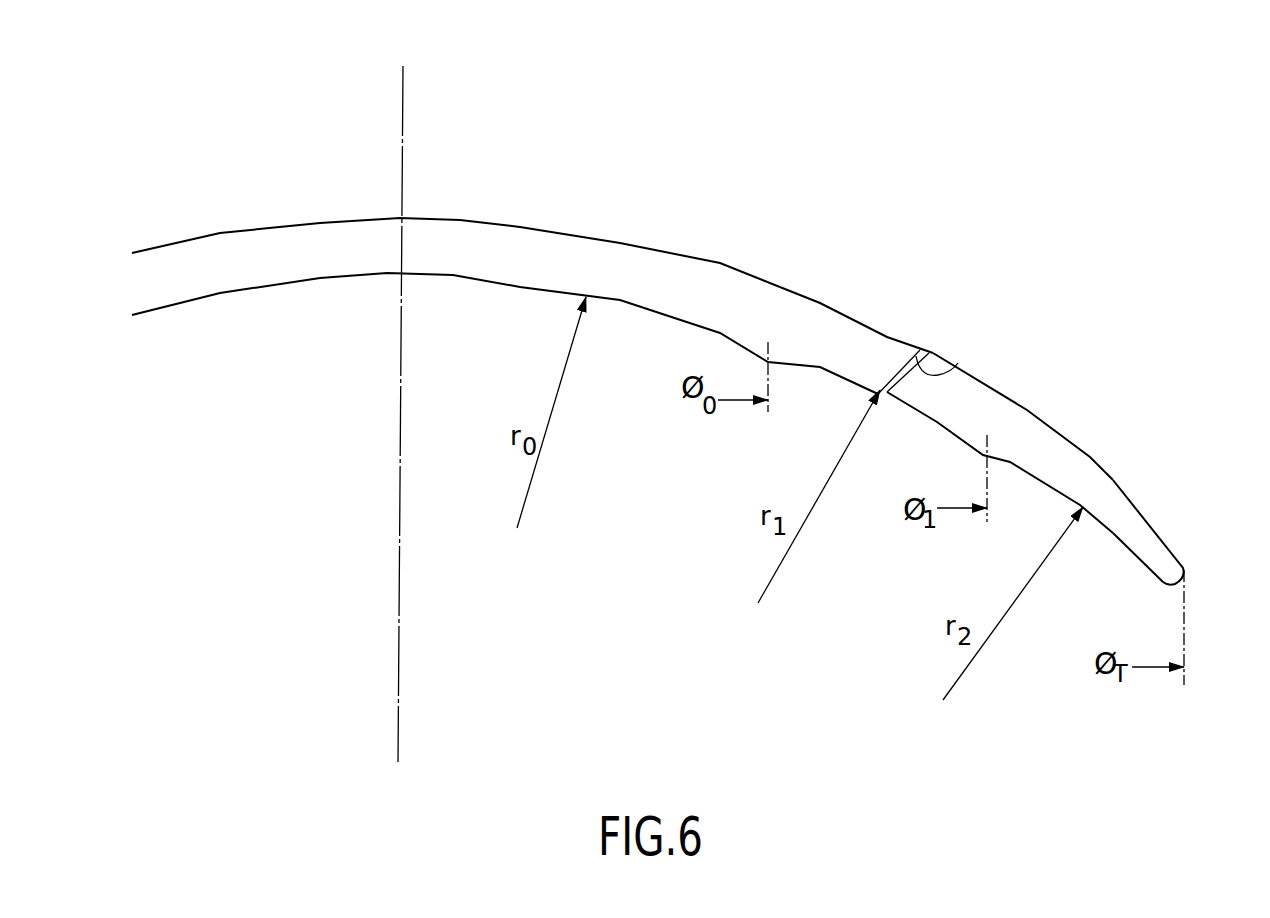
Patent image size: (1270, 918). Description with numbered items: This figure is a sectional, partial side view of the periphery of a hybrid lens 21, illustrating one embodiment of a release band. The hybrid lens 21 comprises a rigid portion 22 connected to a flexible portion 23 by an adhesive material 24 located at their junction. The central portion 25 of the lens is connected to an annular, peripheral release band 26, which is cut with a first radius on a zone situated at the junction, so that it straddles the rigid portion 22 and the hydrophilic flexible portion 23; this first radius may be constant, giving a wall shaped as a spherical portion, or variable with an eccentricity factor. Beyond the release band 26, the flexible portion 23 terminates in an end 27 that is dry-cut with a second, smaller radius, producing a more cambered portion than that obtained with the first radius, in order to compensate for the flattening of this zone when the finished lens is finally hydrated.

The hybrid lens 21 is at (992, 258).
The rigid portion 22 is at (750, 300).
The flexible portion 23 is at (1010, 418).
The adhesive material 24 is at (955, 367).
The central portion 25 is at (318, 257).
The release band 26 is at (893, 363).
The end 27 is at (1112, 505).